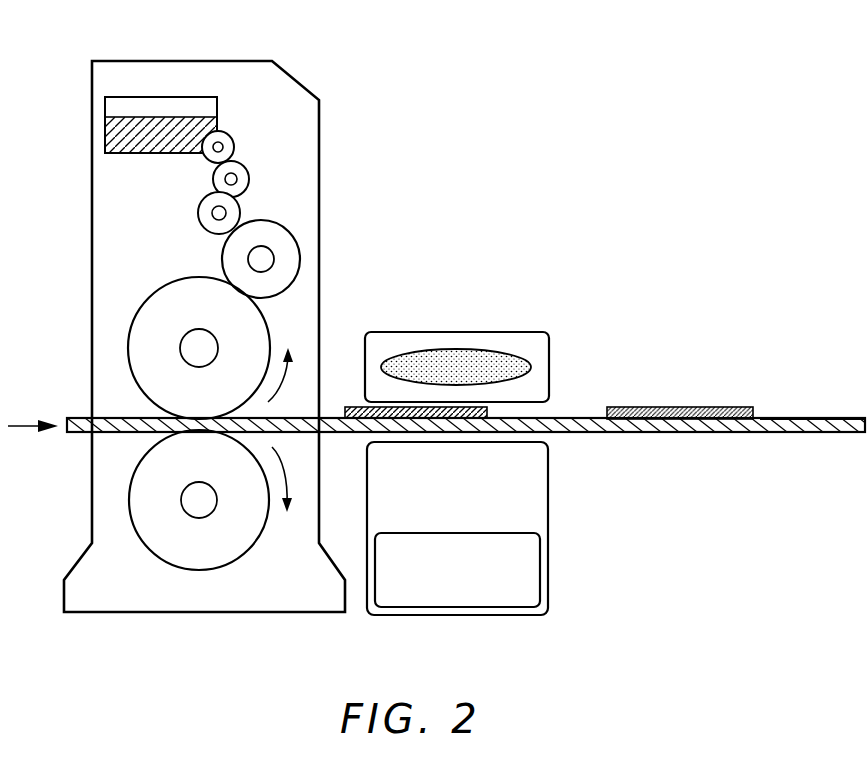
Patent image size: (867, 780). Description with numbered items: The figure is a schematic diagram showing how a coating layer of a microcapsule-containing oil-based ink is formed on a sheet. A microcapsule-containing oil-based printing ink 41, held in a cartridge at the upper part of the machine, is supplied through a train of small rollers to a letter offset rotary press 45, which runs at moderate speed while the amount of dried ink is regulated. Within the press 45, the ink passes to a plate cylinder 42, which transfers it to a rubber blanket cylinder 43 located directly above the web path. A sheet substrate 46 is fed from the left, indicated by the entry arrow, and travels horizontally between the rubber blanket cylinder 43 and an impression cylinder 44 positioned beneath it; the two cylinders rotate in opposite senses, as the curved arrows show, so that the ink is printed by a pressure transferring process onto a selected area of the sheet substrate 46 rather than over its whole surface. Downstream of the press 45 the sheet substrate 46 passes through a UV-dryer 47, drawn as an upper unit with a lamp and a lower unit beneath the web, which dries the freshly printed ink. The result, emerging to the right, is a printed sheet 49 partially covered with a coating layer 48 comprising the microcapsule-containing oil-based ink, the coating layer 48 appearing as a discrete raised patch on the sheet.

The microcapsule-containing oil-based printing ink 41 is at (155, 120).
The plate cylinder 42 is at (287, 252).
The rubber blanket cylinder 43 is at (145, 343).
The impression cylinder 44 is at (145, 500).
The letter offset rotary press 45 is at (288, 178).
The sheet substrate 46 is at (570, 418).
The UV-dryer 47 is at (428, 332).
The coating layer 48 is at (665, 407).
The printed sheet 49 is at (800, 418).